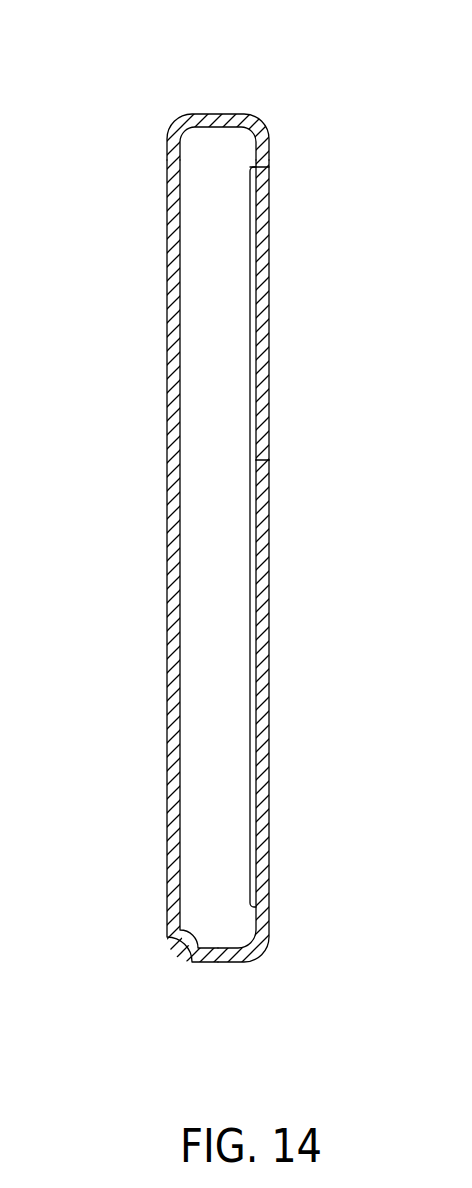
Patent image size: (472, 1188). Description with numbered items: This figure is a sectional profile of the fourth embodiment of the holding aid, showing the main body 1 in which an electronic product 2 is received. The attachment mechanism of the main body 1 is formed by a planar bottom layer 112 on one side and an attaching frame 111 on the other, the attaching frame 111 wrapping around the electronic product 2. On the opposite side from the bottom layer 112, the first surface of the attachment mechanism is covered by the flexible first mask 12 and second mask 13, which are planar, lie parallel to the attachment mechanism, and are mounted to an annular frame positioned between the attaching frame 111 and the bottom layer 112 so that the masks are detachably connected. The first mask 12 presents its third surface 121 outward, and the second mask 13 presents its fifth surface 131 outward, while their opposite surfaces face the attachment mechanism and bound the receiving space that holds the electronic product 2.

The main body 1 is at (286, 107).
The attaching frame 111 is at (190, 128).
The bottom layer 112 is at (172, 380).
The first mask 12 is at (266, 317).
The third surface 121 is at (268, 263).
The second mask 13 is at (265, 618).
The fifth surface 131 is at (268, 540).
The electronic product 2 is at (232, 380).